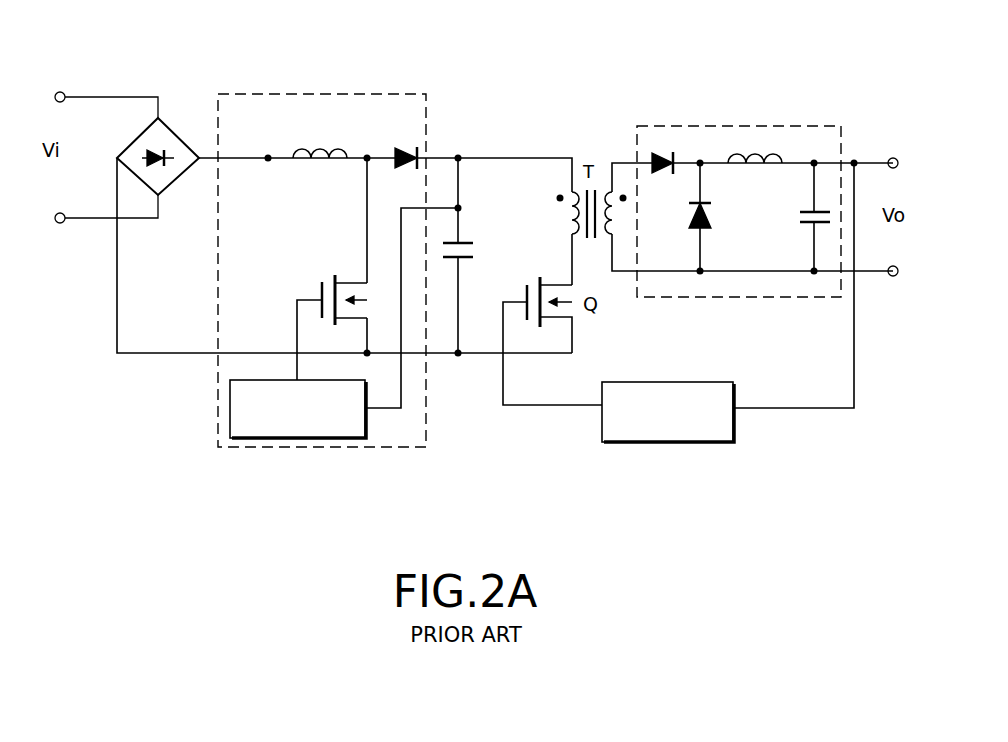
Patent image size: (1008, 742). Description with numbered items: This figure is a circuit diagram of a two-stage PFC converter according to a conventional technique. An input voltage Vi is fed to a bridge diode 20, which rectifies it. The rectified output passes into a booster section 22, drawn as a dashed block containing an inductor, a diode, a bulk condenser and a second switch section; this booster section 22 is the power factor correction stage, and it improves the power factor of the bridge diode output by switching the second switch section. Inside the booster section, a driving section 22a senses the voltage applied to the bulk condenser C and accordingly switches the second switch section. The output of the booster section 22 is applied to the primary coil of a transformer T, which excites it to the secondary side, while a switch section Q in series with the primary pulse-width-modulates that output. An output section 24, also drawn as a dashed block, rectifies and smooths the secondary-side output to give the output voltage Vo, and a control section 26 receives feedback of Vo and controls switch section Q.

The bridge diode 20 is at (178, 136).
The booster section 22 is at (358, 447).
The driving section 22a is at (278, 440).
The output section 24 is at (705, 125).
The control section 26 is at (662, 442).